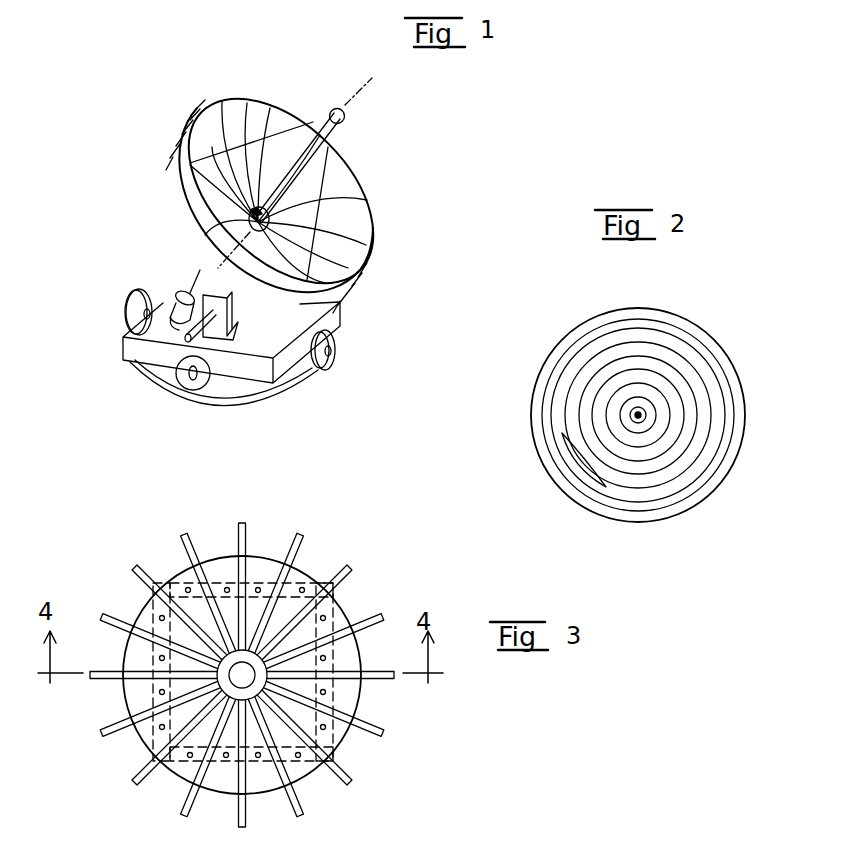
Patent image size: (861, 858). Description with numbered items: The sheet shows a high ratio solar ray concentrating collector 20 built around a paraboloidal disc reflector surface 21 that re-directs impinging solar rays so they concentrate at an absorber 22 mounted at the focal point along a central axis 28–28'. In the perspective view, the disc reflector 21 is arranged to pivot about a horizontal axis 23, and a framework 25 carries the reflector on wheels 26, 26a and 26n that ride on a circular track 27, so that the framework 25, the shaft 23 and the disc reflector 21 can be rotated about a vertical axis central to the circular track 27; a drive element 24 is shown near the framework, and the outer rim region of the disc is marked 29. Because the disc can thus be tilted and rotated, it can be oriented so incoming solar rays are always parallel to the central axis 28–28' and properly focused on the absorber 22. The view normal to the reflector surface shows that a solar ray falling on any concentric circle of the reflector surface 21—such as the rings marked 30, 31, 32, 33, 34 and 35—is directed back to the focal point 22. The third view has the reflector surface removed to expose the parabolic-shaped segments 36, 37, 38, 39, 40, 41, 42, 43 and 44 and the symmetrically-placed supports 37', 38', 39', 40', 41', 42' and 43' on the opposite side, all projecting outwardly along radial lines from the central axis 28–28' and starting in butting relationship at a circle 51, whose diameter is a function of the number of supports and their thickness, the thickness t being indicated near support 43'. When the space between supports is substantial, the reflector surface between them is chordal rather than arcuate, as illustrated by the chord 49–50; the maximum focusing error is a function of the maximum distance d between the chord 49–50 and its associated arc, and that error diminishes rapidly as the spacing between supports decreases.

In FIG. 1, the high ratio solar ray concentrating collector 20 is at (165, 90).
In FIG. 1, the paraboloidal disc reflector surface 21 is at (345, 205).
In FIG. 2, the paraboloidal disc reflector surface 21 is at (700, 342).
In FIG. 1, the absorber 22 is at (332, 109).
In FIG. 2, the absorber 22 is at (637, 407).
In FIG. 1, the horizontal axis (shaft) 23 is at (205, 332).
In FIG. 1, the actuator 24 is at (172, 298).
In FIG. 1, the framework 25 is at (255, 370).
In FIG. 1, the wheel 26 is at (125, 312).
In FIG. 1, the wheel 26a is at (190, 390).
In FIG. 1, the wheel 26n is at (330, 362).
In FIG. 1, the circular track 27 is at (150, 382).
In FIG. 1, the central axis 28 is at (295, 183).
In FIG. 3, the central axis 28 is at (219, 661).
In FIG. 1, the central axis (end) 28' is at (393, 100).
In FIG. 1, the reflector rim 29 is at (372, 253).
In FIG. 2, the reflector rim 29 is at (540, 368).
In FIG. 2, the reflector zone 30 is at (547, 427).
In FIG. 2, the reflector zone 31 is at (627, 493).
In FIG. 2, the reflector zone 32 is at (657, 477).
In FIG. 2, the reflector zone 33 is at (680, 440).
In FIG. 2, the reflector zone 34 is at (670, 400).
In FIG. 2, the reflector center zone 35 is at (640, 412).
In FIG. 3, the parabolic-shaped segment 36 is at (92, 677).
In FIG. 3, the parabolic-shaped segment 37 is at (152, 623).
In FIG. 3, the parabolic-shaped segment 38 is at (176, 593).
In FIG. 3, the parabolic-shaped segment 39 is at (208, 576).
In FIG. 3, the parabolic-shaped segment 40 is at (258, 569).
In FIG. 3, the parabolic-shaped segment 41 is at (297, 583).
In FIG. 3, the parabolic-shaped segment 42 is at (325, 607).
In FIG. 3, the parabolic-shaped segment 43 is at (335, 641).
In FIG. 3, the parabolic-shaped segment 44 is at (393, 677).
In FIG. 3, the symmetrically-placed support 37' is at (142, 718).
In FIG. 3, the symmetrically-placed support 38' is at (163, 741).
In FIG. 3, the symmetrically-placed support 39' is at (190, 766).
In FIG. 3, the symmetrically-placed support 40' is at (263, 774).
In FIG. 3, the symmetrically-placed support 41' is at (297, 765).
In FIG. 3, the symmetrically-placed support 42' is at (326, 745).
In FIG. 3, the symmetrically-placed support 43' is at (347, 719).
In FIG. 2, the chord end 49 is at (583, 470).
In FIG. 2, the chord end 50 is at (597, 493).
In FIG. 3, the circle 51 is at (250, 700).
In FIG. 2, the maximum distance d is at (580, 500).
In FIG. 3, the spoke thickness t is at (337, 716).